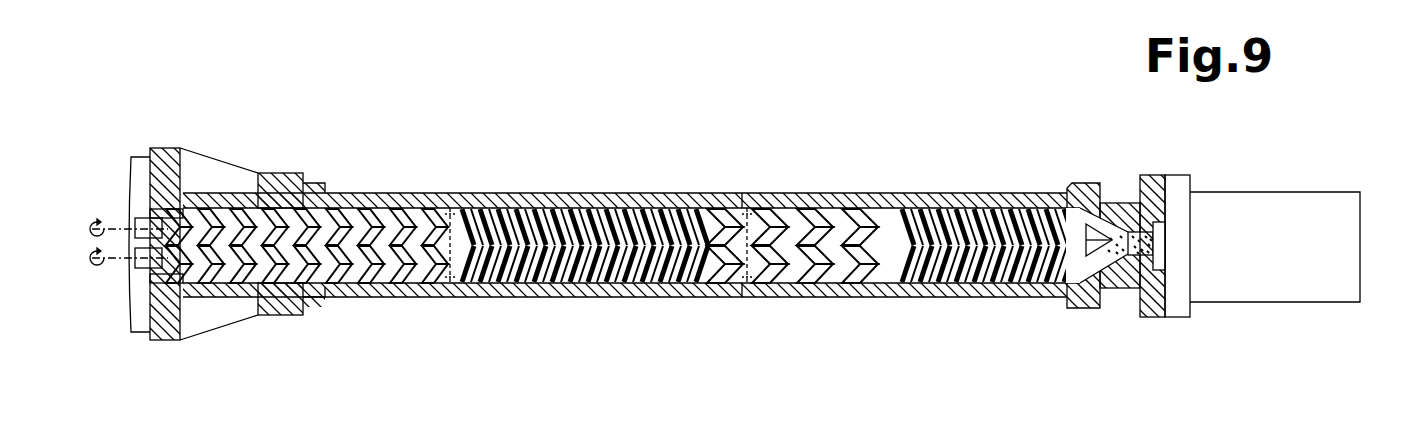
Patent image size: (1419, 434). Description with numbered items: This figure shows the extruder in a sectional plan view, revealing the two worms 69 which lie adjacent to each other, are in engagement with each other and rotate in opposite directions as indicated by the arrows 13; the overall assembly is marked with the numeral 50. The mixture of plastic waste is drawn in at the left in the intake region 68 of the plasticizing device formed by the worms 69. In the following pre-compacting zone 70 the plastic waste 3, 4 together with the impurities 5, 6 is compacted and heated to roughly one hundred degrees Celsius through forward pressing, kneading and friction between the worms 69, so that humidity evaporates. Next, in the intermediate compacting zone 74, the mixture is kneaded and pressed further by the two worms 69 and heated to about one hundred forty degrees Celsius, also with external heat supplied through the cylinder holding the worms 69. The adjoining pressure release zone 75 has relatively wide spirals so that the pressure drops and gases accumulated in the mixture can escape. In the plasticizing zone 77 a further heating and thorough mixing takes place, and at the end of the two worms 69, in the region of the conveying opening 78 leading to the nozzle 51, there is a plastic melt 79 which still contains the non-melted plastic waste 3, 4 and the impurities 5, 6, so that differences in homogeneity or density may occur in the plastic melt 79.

The plastic waste 3 is at (1116, 290).
The plastic waste 4 is at (1086, 290).
The impurities 5 is at (1130, 226).
The impurities 6 is at (1143, 235).
The arrows 13 is at (100, 213).
The extruder 50 is at (653, 152).
The nozzle 51 is at (1258, 184).
The intake region 68 is at (222, 208).
The worm 69 is at (638, 284).
The pre-compacting zone 70 is at (398, 208).
The intermediate compacting zone 74 is at (555, 208).
The pressure release zone 75 is at (822, 195).
The plasticizing zone 77 is at (968, 195).
The conveying opening 78 is at (1160, 255).
The plastic melt 79 is at (1103, 185).